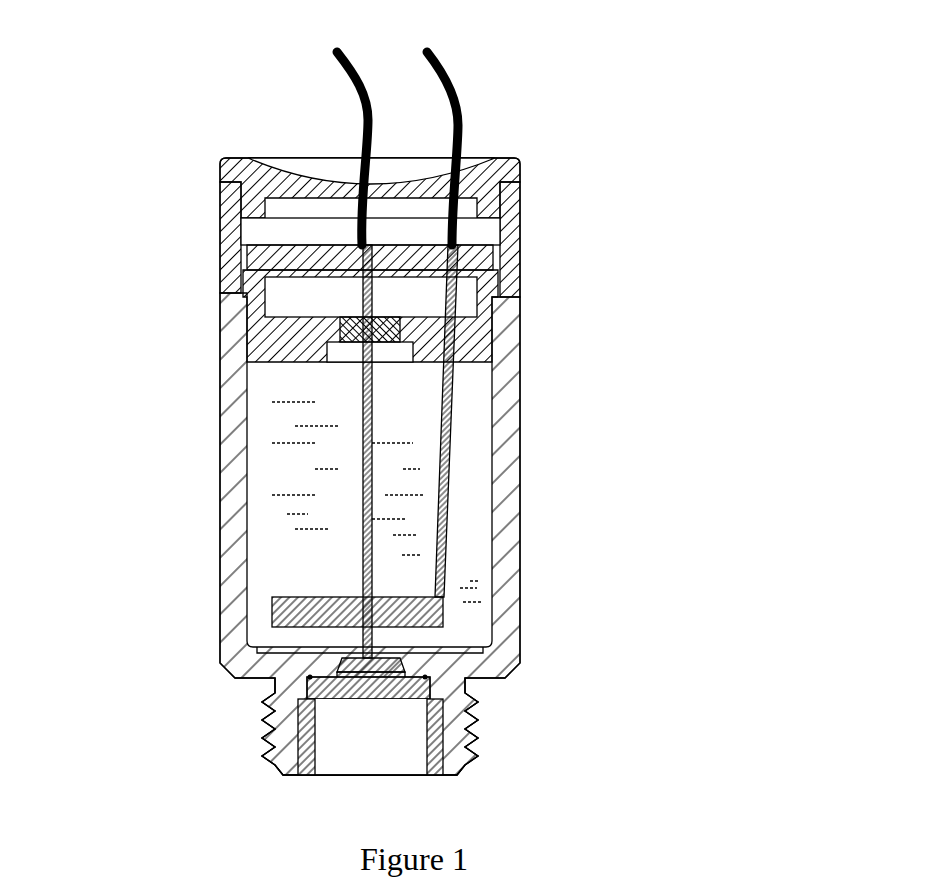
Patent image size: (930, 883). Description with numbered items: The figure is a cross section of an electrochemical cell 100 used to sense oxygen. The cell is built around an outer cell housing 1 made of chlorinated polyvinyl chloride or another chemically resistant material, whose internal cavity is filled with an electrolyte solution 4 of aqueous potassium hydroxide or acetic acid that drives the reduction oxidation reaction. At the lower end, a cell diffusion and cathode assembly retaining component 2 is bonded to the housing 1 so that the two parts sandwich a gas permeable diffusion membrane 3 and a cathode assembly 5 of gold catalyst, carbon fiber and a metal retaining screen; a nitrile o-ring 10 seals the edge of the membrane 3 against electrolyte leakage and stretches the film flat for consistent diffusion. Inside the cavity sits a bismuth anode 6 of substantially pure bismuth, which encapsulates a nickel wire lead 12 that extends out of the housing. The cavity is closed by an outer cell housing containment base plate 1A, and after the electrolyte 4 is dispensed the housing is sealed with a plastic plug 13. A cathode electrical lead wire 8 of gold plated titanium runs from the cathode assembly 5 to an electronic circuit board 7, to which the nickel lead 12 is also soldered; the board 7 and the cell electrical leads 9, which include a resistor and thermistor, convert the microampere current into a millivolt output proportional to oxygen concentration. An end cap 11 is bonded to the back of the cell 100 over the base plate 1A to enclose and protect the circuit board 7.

The electrochemical cell 100 is at (300, 158).
The outer cell housing 1 is at (505, 620).
The outer cell housing containment base plate 1A is at (497, 277).
The cell diffusion and cathode assembly retaining component 2 is at (445, 731).
The diffusion membrane 3 is at (352, 660).
The electrolyte solution 4 is at (295, 463).
The cathode assembly 5 is at (360, 665).
The bismuth anode 6 is at (447, 610).
The electronic circuit board 7 is at (305, 257).
The cathode electrical lead wire 8 is at (365, 497).
The cell electrical lead 9 is at (373, 117).
The o-ring 10 is at (306, 679).
The end cap 11 is at (484, 180).
The nickel wire lead 12 is at (445, 514).
The plug 13 is at (340, 326).